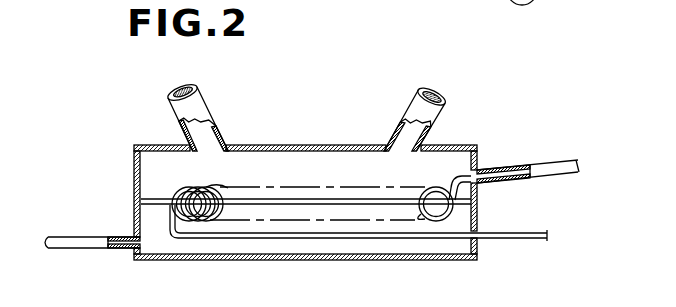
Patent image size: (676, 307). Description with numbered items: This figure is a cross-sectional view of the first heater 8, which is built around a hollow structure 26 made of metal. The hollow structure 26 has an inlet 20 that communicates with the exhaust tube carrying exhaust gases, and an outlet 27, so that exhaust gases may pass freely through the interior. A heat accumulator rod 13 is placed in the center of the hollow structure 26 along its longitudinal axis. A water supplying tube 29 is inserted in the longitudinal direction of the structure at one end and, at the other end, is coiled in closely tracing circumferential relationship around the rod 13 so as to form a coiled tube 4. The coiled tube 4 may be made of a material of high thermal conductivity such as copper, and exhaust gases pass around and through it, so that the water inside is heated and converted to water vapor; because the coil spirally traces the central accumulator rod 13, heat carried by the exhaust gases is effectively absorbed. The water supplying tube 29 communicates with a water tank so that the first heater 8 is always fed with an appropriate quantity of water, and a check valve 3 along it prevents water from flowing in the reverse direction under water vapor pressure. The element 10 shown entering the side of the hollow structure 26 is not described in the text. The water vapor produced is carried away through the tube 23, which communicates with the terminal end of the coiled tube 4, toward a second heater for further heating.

The check valve 3 is at (522, 5).
The coiled tube 4 is at (178, 188).
The first heater 8 is at (312, 187).
The inlet tube 10 is at (84, 237).
The heat accumulator rod 13 is at (362, 204).
The inlet 20 is at (212, 124).
The tube 23 is at (542, 175).
The hollow structure 26 is at (213, 260).
The outlet 27 is at (400, 122).
The water supplying tube 29 is at (520, 239).